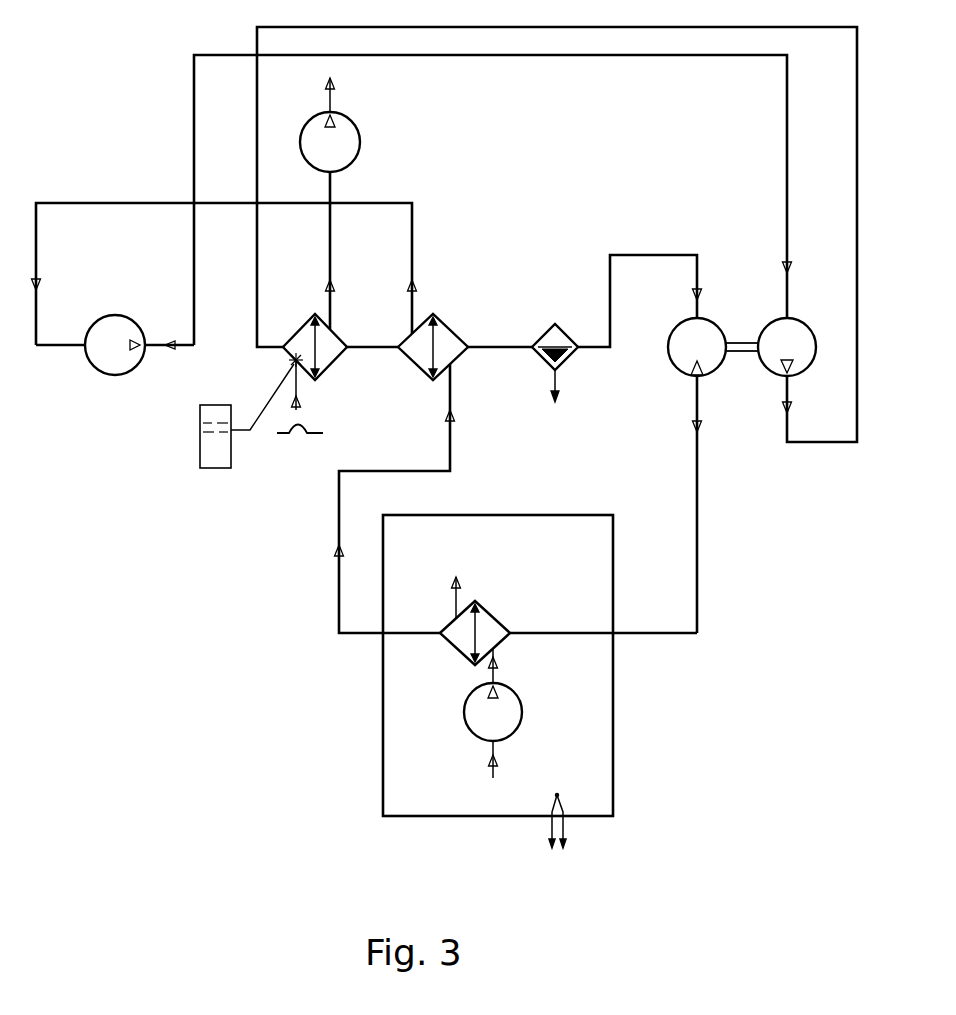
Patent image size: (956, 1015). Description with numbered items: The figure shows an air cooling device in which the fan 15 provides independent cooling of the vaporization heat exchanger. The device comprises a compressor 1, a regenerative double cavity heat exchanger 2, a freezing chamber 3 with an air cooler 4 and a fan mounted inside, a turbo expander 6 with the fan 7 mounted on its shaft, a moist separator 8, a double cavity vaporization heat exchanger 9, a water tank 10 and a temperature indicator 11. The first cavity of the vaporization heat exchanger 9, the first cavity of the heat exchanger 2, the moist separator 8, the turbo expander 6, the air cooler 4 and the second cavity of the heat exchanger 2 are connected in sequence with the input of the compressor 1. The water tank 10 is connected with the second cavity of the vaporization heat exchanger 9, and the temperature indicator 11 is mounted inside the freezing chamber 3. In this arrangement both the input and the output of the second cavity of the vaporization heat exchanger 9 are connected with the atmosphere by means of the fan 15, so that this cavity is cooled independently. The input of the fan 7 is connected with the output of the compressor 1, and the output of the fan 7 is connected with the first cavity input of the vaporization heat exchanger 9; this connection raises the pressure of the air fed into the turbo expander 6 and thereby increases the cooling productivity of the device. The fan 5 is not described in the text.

The compressor 1 is at (124, 328).
The regenerative double cavity heat exchanger 2 is at (448, 338).
The freezing chamber 3 is at (385, 683).
The air cooler 4 is at (487, 620).
The pump of filtration unit 5 is at (516, 700).
The turbo expander 6 is at (705, 330).
The fan 7 is at (797, 333).
The moist separator 8 is at (560, 335).
The vaporization heat exchanger 9 is at (333, 338).
The water tank 10 is at (200, 448).
The temperature indicator 11 is at (564, 828).
The fan 15 is at (348, 133).